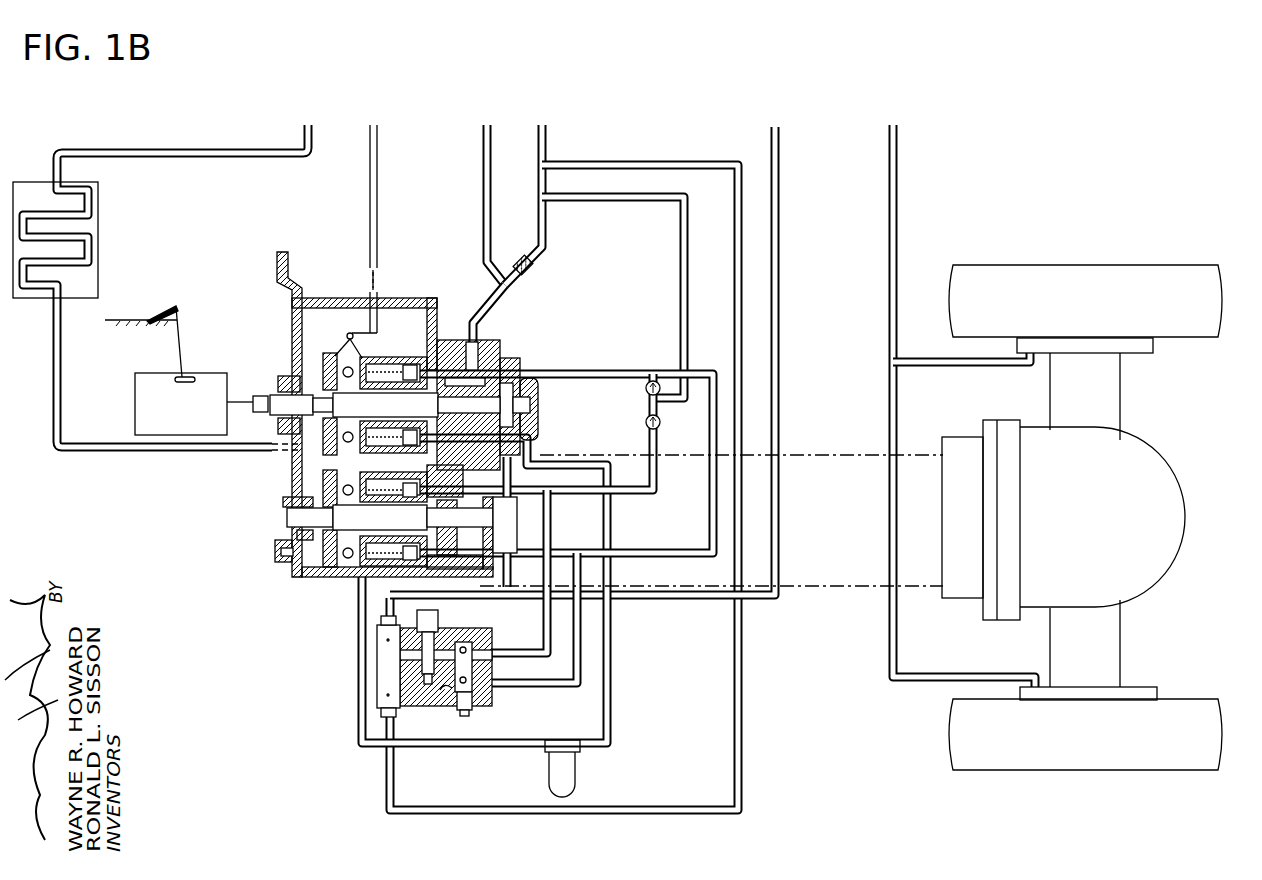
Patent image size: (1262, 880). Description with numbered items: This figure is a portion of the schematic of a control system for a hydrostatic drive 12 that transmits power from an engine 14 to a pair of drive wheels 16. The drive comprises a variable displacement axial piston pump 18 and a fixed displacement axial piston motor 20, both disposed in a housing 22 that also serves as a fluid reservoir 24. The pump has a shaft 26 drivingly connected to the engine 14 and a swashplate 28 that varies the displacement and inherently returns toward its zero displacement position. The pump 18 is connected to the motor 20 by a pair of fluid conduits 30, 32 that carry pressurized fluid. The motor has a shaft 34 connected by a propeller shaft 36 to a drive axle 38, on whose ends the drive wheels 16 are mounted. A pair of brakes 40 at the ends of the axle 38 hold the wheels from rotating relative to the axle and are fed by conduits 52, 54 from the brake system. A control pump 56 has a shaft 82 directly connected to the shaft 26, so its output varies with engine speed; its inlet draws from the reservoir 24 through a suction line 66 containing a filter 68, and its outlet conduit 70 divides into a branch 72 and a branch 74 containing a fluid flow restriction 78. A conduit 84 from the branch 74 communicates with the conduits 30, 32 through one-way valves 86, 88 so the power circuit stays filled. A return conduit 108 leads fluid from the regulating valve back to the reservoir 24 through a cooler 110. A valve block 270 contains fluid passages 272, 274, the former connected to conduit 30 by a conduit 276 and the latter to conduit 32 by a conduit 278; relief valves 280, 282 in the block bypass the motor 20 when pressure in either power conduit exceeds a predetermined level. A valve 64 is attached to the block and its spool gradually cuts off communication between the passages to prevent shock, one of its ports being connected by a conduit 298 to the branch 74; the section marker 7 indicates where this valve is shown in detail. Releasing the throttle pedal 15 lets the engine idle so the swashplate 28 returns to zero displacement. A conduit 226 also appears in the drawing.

The section line indicator 7 is at (415, 608).
The hydrostatic drive 12 is at (224, 512).
The engine 14 is at (140, 402).
The throttle pedal 15 is at (168, 300).
The drive wheels 16 is at (1117, 273).
The variable displacement axial piston pump 18 is at (398, 357).
The fixed displacement axial piston motor 20 is at (303, 568).
The housing 22 is at (277, 262).
The fluid reservoir 24 is at (347, 562).
The shaft 26 is at (391, 415).
The swashplate 28 is at (332, 357).
The fluid conduit 30 is at (590, 372).
The fluid conduit 32 is at (549, 436).
The shaft 34 is at (391, 530).
The propeller shaft 36 is at (833, 560).
The drive axle 38 is at (1155, 558).
The brakes 40 is at (1138, 352).
The conduit 52 is at (890, 230).
The conduit 54 is at (927, 358).
The control pump 56 is at (520, 373).
The valve 64 is at (382, 665).
The suction line 66 is at (612, 660).
The filter 68 is at (570, 770).
The conduit 70 is at (480, 302).
The branch 72 is at (482, 130).
The branch 74 is at (545, 132).
The fluid flow restriction 78 is at (533, 266).
The shaft 82 is at (483, 365).
The conduit 84 is at (607, 200).
The one-way valve 86 is at (646, 388).
The one-way valve 88 is at (646, 422).
The fluid conduit 108 is at (218, 150).
The cooler 110 is at (92, 228).
The conduit 226 is at (780, 140).
The valve block 270 is at (492, 667).
The fluid passage 272 is at (447, 708).
The fluid passage 274 is at (451, 650).
The conduit 276 is at (533, 686).
The conduit 278 is at (512, 650).
The relief valve 280 is at (468, 715).
The relief valve 282 is at (428, 612).
The conduit 298 is at (500, 812).